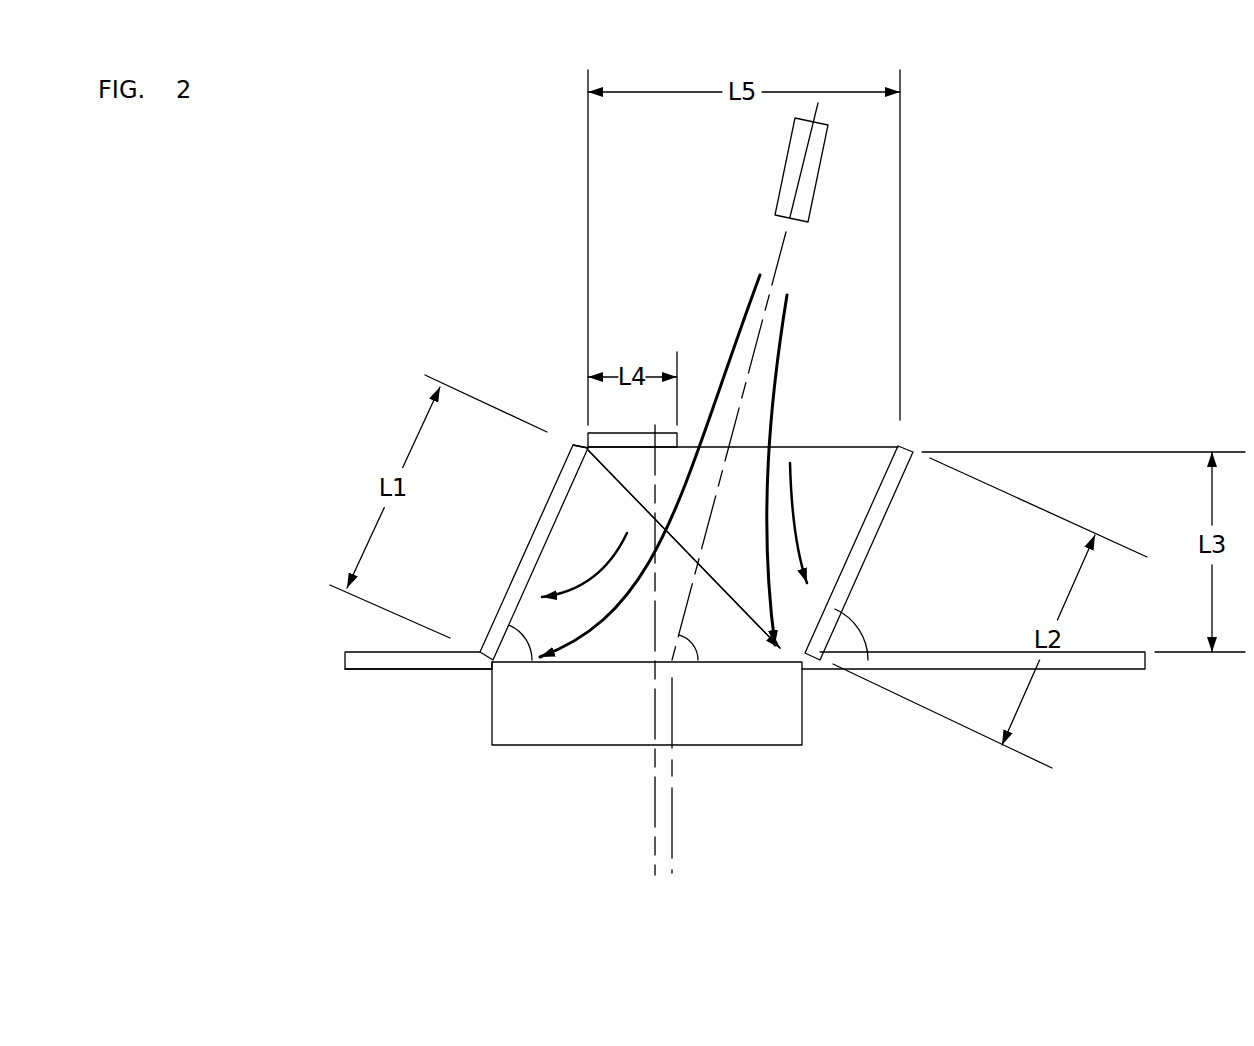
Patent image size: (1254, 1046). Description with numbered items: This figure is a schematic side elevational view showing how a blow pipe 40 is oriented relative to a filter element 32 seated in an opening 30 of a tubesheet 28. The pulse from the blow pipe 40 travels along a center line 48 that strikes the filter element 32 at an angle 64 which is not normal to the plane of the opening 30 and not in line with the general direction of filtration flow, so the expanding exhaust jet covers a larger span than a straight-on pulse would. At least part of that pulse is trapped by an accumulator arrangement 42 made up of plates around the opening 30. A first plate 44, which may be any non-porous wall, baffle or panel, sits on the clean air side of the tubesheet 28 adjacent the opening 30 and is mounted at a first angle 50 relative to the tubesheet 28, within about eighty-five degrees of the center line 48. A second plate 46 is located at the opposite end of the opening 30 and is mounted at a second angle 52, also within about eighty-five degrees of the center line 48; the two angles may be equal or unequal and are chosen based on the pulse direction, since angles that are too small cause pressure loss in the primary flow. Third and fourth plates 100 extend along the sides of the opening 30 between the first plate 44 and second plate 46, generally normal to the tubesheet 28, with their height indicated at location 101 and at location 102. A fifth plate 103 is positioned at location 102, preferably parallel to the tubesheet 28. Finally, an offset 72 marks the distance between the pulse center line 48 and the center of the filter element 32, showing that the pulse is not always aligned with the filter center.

The tubesheet 28 is at (365, 652).
The opening 30 is at (492, 670).
The filter element 32 is at (798, 717).
The blow pipe 40 is at (813, 190).
The accumulator arrangement 42 is at (522, 490).
The first plate 44 is at (525, 548).
The second plate 46 is at (887, 518).
The center line 48 is at (732, 437).
The first angle 50 is at (525, 630).
The second angle 52 is at (865, 630).
The angle 64 is at (695, 647).
The offset 72 is at (588, 857).
The third and fourth plate 100 is at (878, 458).
The height location of plate 100 101 is at (845, 457).
The location on plate 100 102 is at (590, 440).
The fifth plate 103 is at (663, 430).